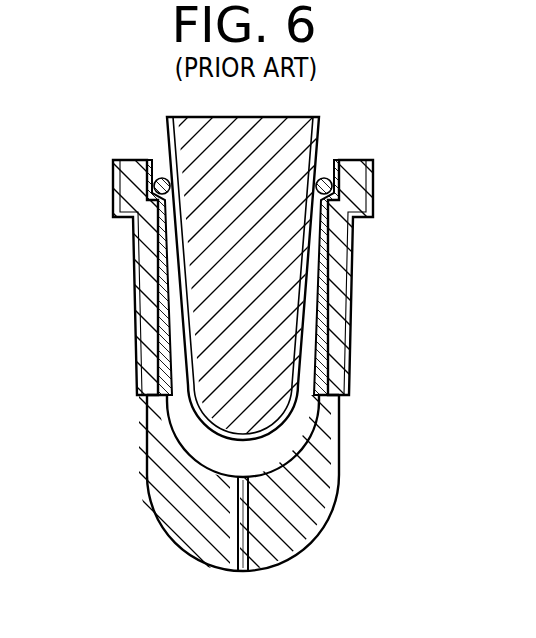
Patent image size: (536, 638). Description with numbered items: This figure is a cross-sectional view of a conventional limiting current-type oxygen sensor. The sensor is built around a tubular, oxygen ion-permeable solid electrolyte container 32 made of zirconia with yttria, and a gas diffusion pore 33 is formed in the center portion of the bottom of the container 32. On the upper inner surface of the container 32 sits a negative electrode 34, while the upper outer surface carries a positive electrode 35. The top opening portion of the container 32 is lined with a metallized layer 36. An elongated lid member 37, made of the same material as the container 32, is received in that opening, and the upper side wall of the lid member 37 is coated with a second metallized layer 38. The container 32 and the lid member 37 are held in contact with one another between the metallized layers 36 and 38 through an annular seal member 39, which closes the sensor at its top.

The solid electrolyte container 32 is at (312, 480).
The gas diffusion pore 33 is at (247, 571).
The negative electrode 34 is at (328, 268).
The positive electrode 35 is at (353, 308).
The metallized layer 36 is at (160, 160).
The lid member 37 is at (206, 310).
The metallized layer 38 is at (320, 135).
The annular seal member 39 is at (153, 187).